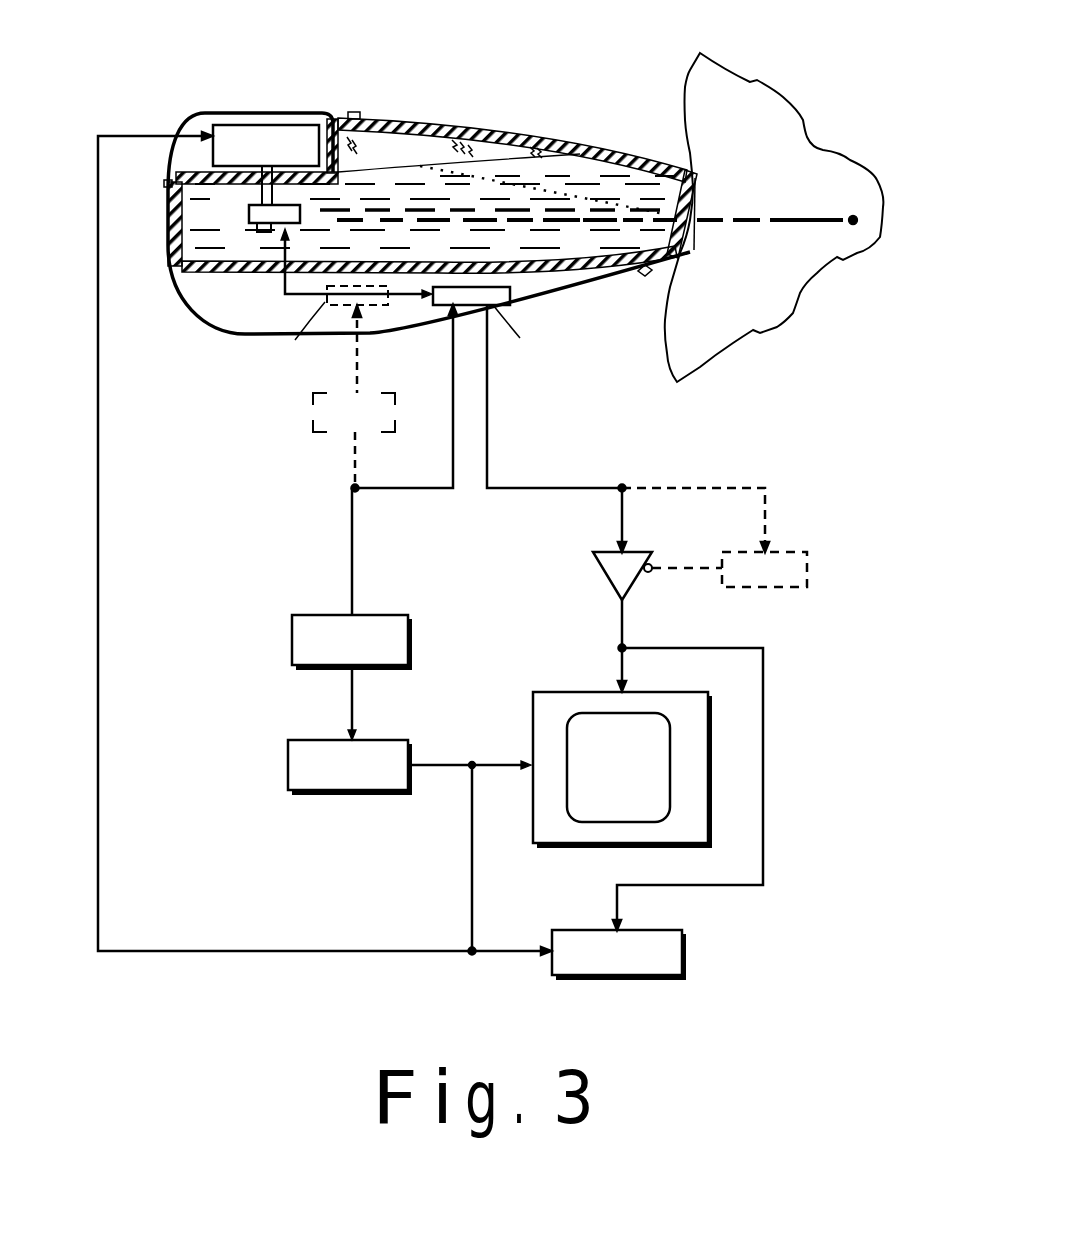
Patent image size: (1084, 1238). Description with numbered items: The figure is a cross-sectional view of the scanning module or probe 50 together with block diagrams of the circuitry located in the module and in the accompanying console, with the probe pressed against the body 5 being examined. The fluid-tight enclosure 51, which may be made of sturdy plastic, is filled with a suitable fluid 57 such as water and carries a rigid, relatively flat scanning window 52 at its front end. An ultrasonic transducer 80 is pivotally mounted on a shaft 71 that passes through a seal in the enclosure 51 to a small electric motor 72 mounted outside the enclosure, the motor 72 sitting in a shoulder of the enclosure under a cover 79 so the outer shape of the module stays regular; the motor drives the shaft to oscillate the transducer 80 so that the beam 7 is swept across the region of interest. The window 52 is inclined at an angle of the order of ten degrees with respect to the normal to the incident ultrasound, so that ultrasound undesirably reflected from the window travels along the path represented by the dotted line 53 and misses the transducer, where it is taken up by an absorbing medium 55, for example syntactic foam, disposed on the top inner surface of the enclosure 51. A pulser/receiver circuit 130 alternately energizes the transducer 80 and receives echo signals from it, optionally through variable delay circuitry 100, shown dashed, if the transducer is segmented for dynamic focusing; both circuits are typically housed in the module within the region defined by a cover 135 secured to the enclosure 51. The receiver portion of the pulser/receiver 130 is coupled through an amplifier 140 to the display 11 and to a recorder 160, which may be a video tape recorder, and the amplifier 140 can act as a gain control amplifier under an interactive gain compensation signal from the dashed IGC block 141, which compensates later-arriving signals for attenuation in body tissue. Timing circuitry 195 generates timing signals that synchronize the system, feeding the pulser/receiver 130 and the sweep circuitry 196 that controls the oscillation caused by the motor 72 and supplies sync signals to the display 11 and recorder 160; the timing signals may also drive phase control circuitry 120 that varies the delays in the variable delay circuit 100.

The body of patient 5 is at (722, 85).
The beam 7 is at (743, 222).
The display 11 is at (570, 691).
The scanning module 50 is at (500, 368).
The fluid-tight enclosure 51 is at (182, 278).
The scanning window 52 is at (698, 202).
The dotted line 53 is at (493, 180).
The absorbing medium 55 is at (410, 123).
The fluid 57 is at (365, 178).
The shaft 71 is at (255, 190).
The motor 72 is at (240, 135).
The motor compartment 79 is at (290, 113).
The ultrasonic transducer 80 is at (249, 221).
The variable delay circuitry 100 is at (390, 300).
The phase control circuitry 120 is at (313, 407).
The pulser/receiver circuit 130 is at (510, 293).
The cover 135 is at (197, 318).
The amplifier 140 is at (600, 573).
The IGC gain control circuitry 141 is at (807, 567).
The recorder 160 is at (685, 938).
The timing circuitry 195 is at (400, 615).
The sweep circuitry 196 is at (408, 742).